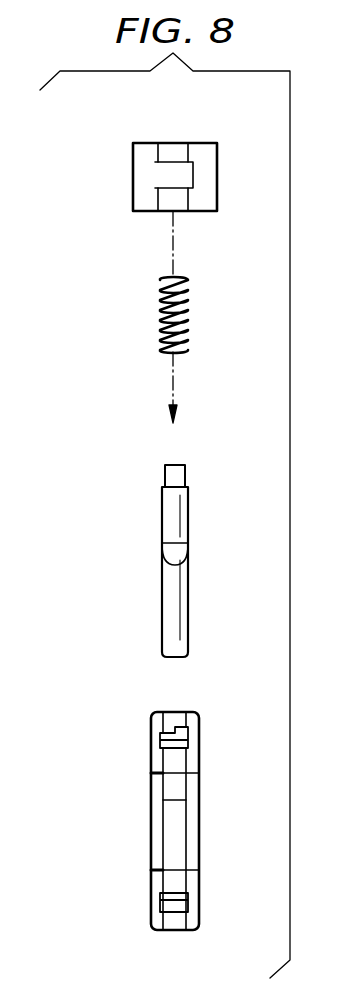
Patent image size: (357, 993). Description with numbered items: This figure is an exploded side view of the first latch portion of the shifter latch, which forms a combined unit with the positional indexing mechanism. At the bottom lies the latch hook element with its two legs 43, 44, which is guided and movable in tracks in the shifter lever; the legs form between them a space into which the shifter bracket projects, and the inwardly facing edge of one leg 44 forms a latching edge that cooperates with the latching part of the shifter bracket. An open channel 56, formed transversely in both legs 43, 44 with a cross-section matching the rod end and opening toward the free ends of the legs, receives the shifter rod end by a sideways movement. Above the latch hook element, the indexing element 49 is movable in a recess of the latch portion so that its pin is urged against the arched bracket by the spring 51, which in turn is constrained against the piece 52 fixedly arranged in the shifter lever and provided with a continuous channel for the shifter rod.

The piece 52 is at (140, 172).
The spring 51 is at (160, 298).
The indexing element 49 is at (171, 535).
The leg 43 is at (160, 757).
The open channel 56 is at (173, 733).
The leg 44 is at (162, 882).